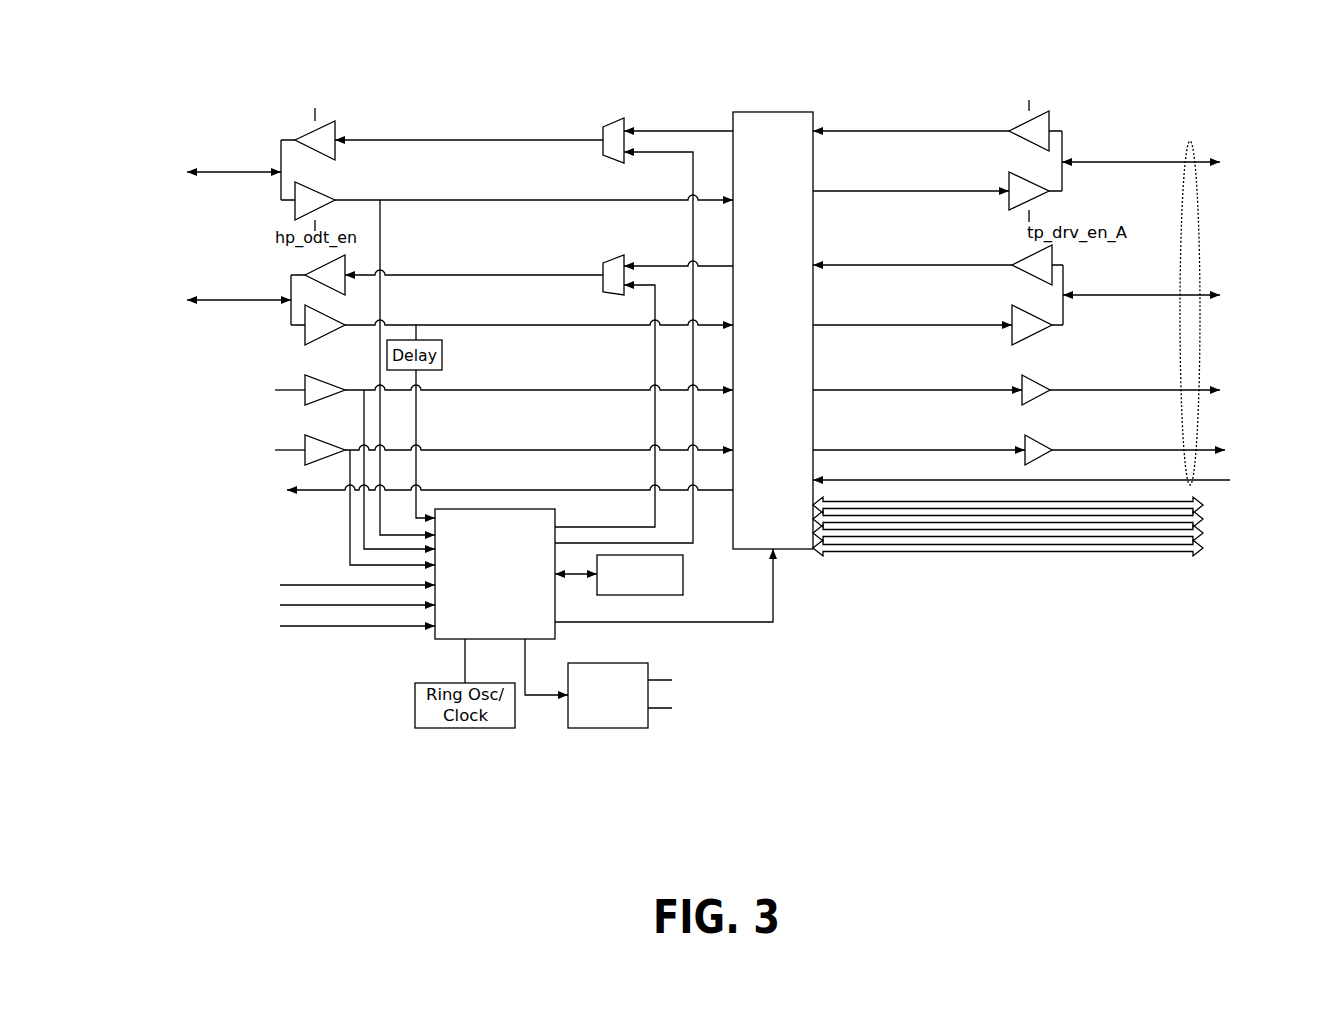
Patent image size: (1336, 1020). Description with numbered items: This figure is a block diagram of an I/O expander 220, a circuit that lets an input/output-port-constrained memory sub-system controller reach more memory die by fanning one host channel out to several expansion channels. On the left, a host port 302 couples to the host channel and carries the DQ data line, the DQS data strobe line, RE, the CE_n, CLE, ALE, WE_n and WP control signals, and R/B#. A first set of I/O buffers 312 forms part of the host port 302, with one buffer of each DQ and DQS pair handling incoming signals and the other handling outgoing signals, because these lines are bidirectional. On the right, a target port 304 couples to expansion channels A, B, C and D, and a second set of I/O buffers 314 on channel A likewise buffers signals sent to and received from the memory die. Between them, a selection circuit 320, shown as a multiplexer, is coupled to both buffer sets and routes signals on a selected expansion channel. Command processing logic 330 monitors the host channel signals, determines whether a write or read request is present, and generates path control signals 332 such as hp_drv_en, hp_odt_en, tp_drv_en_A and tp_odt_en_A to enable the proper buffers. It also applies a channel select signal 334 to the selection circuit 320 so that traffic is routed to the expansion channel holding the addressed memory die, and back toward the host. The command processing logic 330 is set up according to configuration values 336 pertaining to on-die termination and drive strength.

The I/O expander 220 is at (624, 62).
The host port 302 is at (197, 132).
The target port 304 is at (1219, 98).
The first set of I/O buffers 312 is at (375, 113).
The second set of I/O buffers 314 is at (1005, 98).
The selection circuit 320 is at (968, 349).
The command processing logic 330 is at (360, 574).
The path control signals 332 is at (785, 733).
The channel select signal 334 is at (774, 628).
The configuration values 336 is at (693, 570).